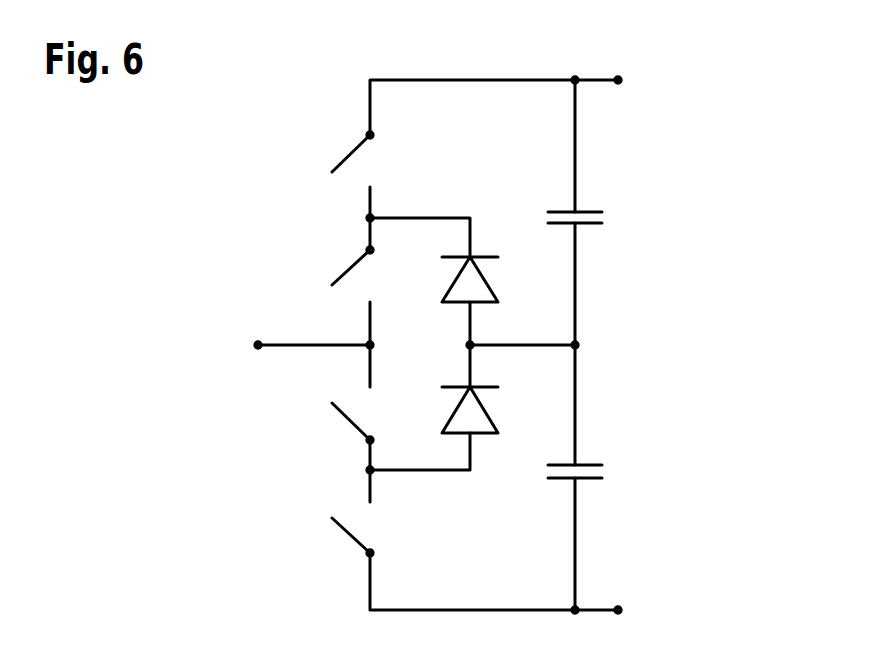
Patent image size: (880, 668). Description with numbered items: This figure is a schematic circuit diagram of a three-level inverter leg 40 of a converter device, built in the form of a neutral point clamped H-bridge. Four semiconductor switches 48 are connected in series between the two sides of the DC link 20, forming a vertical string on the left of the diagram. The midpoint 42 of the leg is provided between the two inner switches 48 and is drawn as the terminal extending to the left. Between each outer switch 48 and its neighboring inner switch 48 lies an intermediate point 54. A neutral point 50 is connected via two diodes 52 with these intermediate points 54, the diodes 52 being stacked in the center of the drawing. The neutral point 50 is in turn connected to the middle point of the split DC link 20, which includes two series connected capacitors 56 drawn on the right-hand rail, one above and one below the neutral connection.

The three-level inverter leg 40 is at (697, 95).
The DC link 20 is at (633, 370).
The midpoint 42 is at (287, 343).
The semiconductor switch 48 is at (349, 150).
The neutral point 50 is at (535, 345).
The diode 52 is at (486, 277).
The intermediate point 54 is at (372, 217).
The capacitor 56 is at (631, 196).